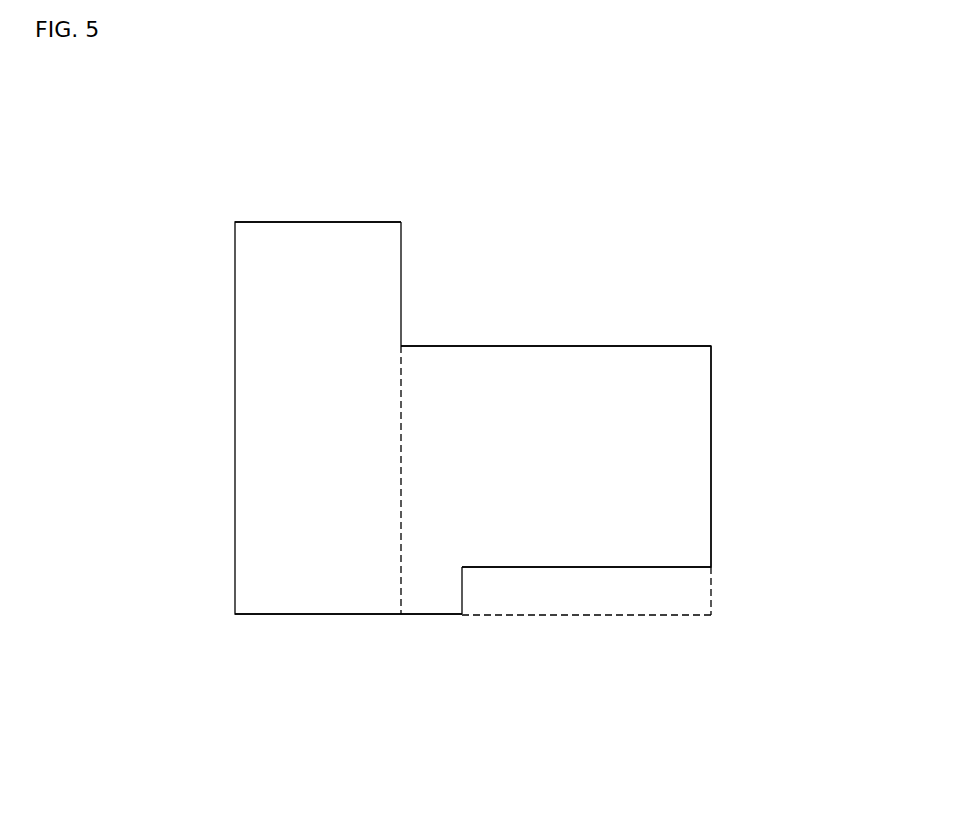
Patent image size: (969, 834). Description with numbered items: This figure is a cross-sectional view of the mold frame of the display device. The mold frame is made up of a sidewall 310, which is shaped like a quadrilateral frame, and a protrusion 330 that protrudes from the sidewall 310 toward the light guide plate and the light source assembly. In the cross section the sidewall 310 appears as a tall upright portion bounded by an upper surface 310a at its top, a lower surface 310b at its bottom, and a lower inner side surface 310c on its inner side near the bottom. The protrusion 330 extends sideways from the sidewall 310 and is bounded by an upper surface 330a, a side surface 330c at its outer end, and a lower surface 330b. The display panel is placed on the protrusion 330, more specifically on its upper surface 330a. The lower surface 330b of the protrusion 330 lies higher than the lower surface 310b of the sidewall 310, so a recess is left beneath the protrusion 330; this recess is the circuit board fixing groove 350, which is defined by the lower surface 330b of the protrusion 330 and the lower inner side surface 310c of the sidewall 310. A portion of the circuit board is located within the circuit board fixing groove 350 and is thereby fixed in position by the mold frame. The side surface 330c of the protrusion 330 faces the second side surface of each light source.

The sidewall 310 is at (282, 397).
The upper surface of the sidewall 310a is at (321, 222).
The lower surface of the sidewall 310b is at (348, 614).
The lower inner side surface of the sidewall 310c is at (460, 587).
The protrusion 330 is at (662, 490).
The upper surface of the protrusion 330a is at (617, 347).
The lower surface of the protrusion 330b is at (626, 570).
The side surface of the protrusion 330c is at (711, 455).
The circuit board fixing groove 350 is at (568, 597).